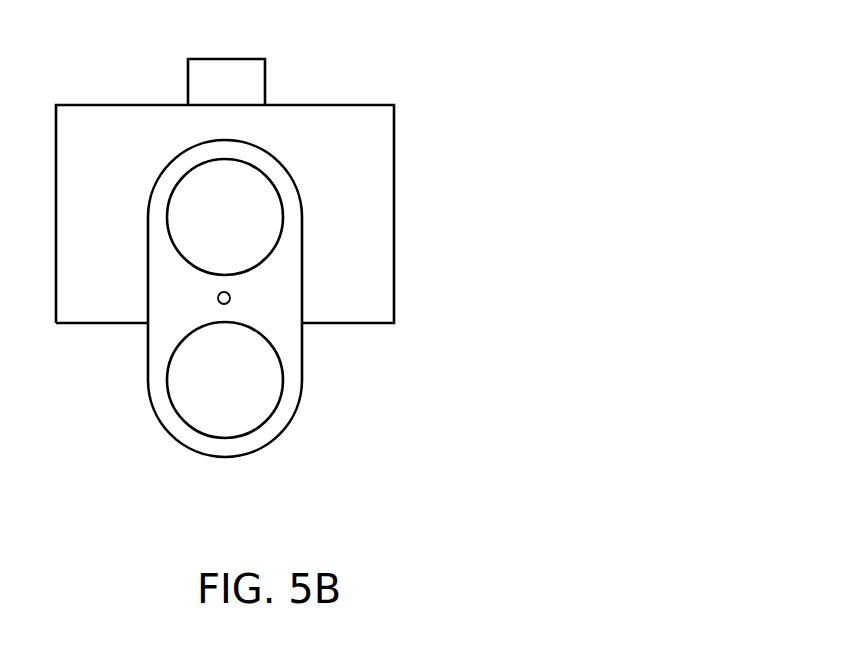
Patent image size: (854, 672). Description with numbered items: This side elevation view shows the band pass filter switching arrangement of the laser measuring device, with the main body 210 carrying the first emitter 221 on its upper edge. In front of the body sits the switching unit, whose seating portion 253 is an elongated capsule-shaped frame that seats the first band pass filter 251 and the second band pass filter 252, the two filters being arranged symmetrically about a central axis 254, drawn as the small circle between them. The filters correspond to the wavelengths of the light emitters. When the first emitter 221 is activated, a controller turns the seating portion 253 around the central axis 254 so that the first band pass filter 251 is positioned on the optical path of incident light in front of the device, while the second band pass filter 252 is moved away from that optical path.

The housing body 210 is at (394, 122).
The first emitter 221 is at (265, 80).
The first band pass filter 251 is at (283, 222).
The second band pass filter 252 is at (248, 392).
The seating portion 253 is at (289, 175).
The central axis 254 is at (230, 298).